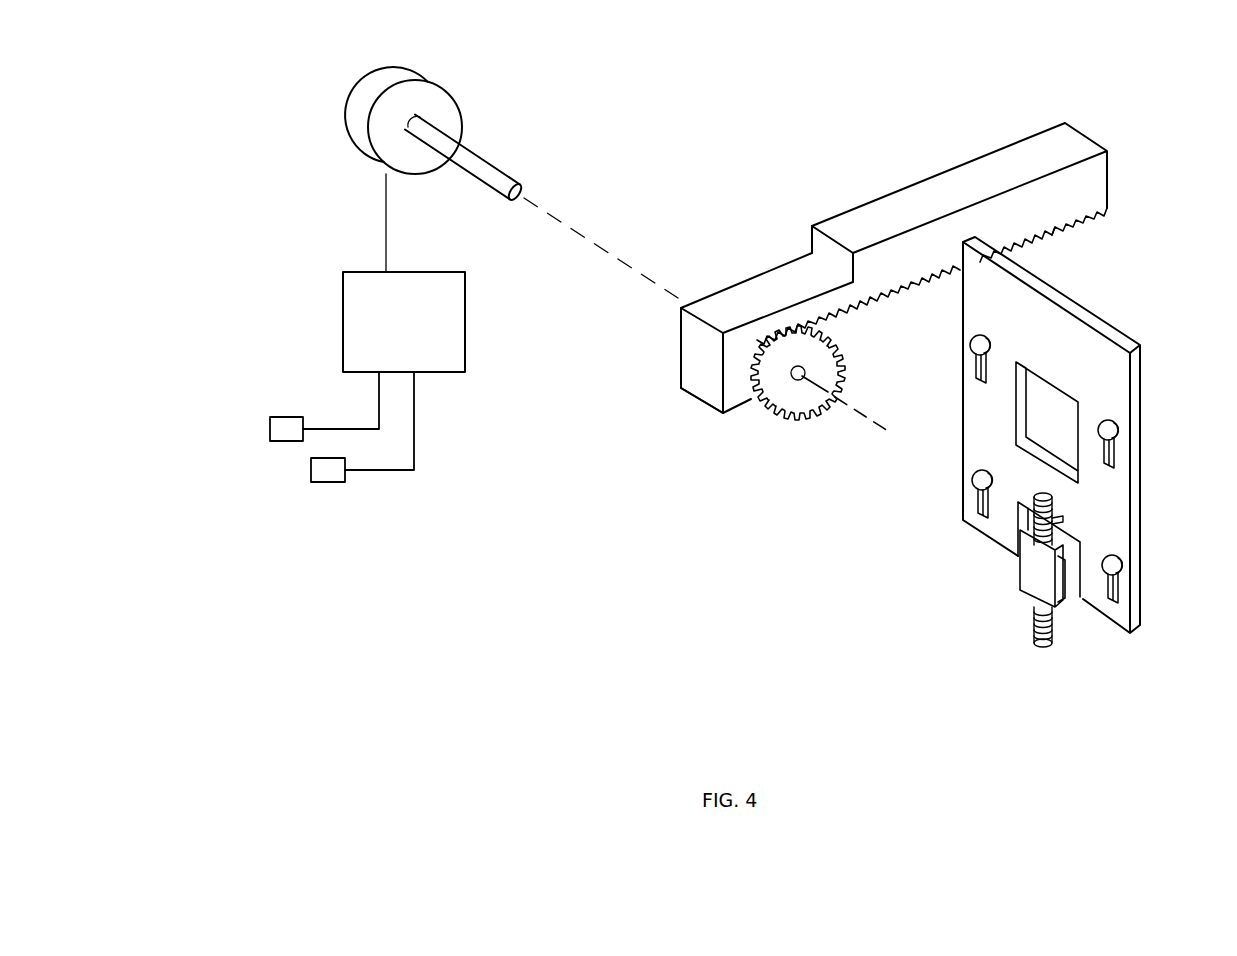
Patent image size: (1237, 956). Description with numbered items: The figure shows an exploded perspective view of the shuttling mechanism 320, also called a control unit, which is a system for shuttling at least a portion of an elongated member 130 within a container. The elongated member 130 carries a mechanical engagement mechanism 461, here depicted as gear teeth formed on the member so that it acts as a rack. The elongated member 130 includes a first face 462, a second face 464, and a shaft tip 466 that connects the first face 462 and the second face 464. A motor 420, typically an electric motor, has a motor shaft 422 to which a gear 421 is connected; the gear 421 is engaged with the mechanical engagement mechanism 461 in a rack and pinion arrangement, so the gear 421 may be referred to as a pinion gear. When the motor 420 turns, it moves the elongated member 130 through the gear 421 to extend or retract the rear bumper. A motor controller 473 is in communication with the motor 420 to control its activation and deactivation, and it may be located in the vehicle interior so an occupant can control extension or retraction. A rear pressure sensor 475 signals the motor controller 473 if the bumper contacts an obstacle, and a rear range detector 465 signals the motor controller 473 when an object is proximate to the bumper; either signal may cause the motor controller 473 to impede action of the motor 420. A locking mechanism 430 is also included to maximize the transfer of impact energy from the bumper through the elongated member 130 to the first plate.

The motor 420 is at (357, 95).
The motor shaft 422 is at (488, 154).
The motor controller 473 is at (358, 272).
The rear pressure sensor 475 is at (283, 417).
The rear range detector 465 is at (318, 482).
The elongated member 130 is at (997, 148).
The second face 464 is at (808, 225).
The shaft tip 466 is at (738, 283).
The first face 462 is at (703, 405).
The mechanical engagement mechanism 461 is at (1052, 230).
The gear 421 is at (795, 422).
The locking mechanism 430 is at (1118, 502).
The shuttling mechanism 320 is at (622, 584).